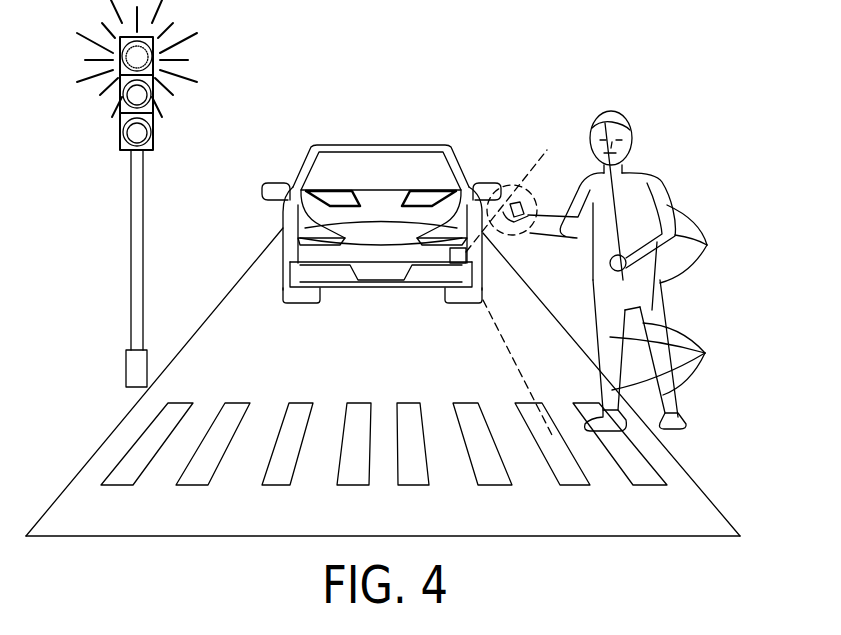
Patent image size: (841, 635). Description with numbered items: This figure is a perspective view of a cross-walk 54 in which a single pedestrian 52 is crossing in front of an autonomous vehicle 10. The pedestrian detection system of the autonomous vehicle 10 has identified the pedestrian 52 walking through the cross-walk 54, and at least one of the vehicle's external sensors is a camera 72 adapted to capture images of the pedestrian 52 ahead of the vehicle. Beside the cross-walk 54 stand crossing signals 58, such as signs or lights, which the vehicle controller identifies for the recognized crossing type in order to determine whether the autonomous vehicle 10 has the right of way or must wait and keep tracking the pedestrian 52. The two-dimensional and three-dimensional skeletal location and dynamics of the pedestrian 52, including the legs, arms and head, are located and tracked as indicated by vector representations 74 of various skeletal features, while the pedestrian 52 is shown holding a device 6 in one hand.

The mobile device 6 is at (502, 178).
The autonomous vehicle 10 is at (293, 226).
The pedestrian 52 is at (632, 143).
The cross-walk 54 is at (278, 471).
The crossing signals 58 is at (139, 133).
The camera 72 is at (458, 250).
The vector representations 74 is at (707, 246).